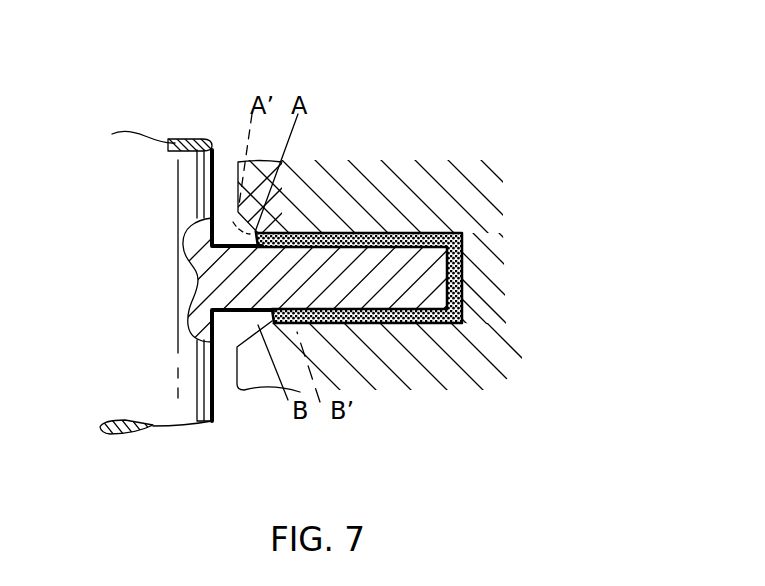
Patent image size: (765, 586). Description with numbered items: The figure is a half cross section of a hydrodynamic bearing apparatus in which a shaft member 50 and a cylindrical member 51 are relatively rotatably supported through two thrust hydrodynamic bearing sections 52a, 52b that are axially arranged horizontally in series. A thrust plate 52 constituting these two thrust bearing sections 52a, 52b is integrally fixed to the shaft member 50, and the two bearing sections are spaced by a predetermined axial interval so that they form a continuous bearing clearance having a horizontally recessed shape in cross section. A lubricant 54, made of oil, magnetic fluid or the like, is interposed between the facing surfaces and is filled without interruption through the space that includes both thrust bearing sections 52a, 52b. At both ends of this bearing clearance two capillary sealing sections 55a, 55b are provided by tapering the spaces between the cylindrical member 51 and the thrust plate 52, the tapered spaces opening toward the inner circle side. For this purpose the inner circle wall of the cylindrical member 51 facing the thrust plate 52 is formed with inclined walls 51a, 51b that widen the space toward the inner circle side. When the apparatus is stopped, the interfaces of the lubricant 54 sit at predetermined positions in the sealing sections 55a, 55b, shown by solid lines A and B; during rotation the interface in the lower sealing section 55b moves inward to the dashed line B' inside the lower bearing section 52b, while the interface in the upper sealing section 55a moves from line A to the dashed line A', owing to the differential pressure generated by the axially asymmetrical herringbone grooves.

The shaft member 50 is at (193, 283).
The cylindrical member 51 is at (478, 264).
The inclined wall 51a is at (322, 175).
The inclined wall 51b is at (250, 390).
The thrust plate 52 is at (424, 320).
The thrust hydrodynamic bearing section 52a is at (404, 278).
The thrust hydrodynamic bearing section 52b is at (404, 303).
The lubricant 54 is at (442, 232).
The capillary sealing section 55a is at (222, 200).
The capillary sealing section 55b is at (240, 320).